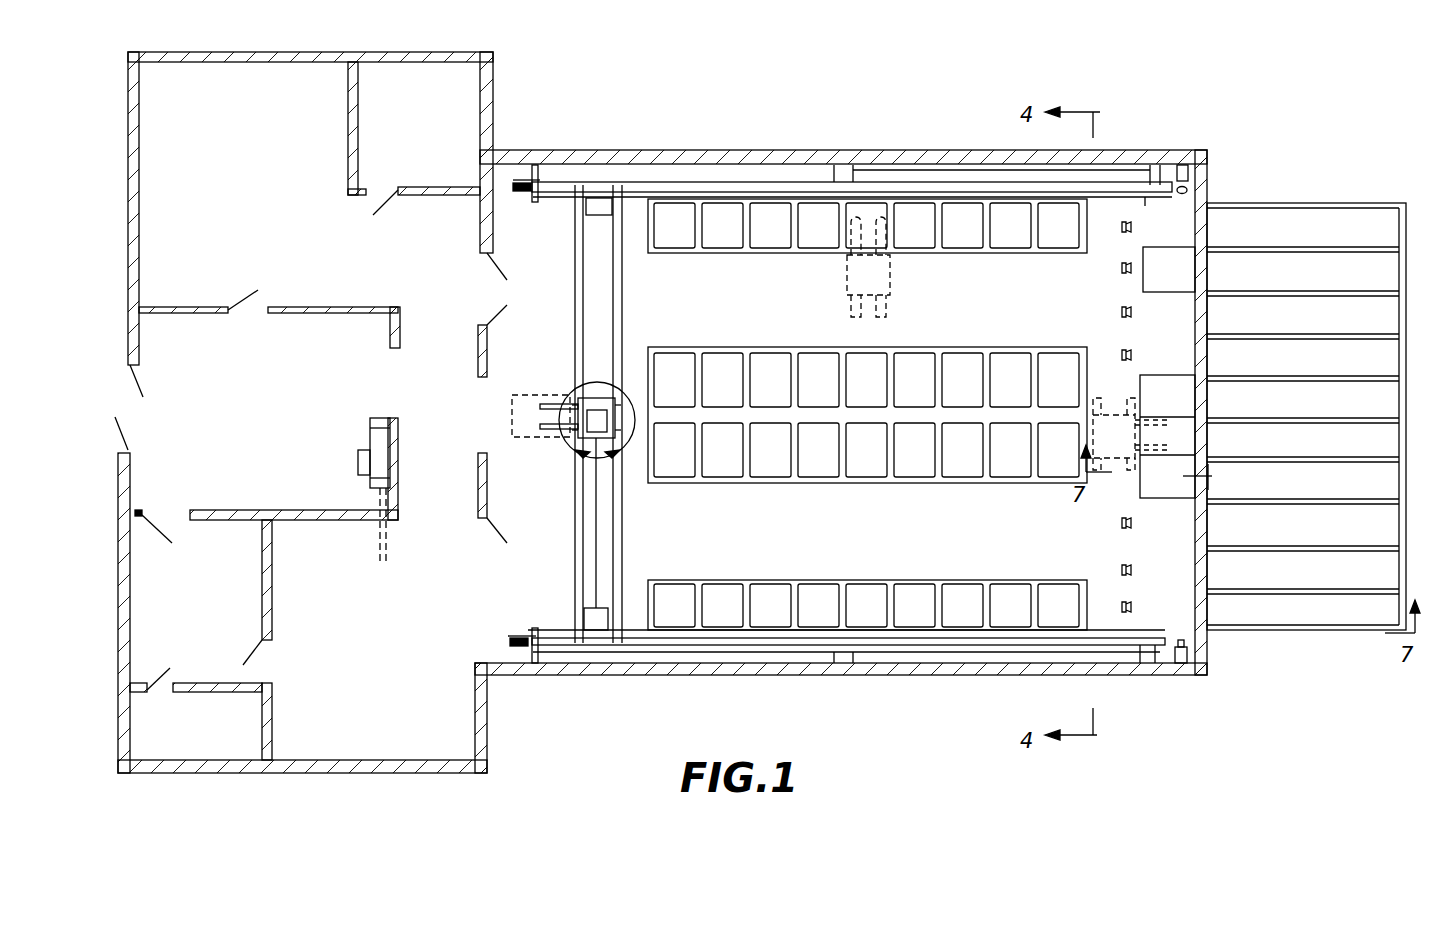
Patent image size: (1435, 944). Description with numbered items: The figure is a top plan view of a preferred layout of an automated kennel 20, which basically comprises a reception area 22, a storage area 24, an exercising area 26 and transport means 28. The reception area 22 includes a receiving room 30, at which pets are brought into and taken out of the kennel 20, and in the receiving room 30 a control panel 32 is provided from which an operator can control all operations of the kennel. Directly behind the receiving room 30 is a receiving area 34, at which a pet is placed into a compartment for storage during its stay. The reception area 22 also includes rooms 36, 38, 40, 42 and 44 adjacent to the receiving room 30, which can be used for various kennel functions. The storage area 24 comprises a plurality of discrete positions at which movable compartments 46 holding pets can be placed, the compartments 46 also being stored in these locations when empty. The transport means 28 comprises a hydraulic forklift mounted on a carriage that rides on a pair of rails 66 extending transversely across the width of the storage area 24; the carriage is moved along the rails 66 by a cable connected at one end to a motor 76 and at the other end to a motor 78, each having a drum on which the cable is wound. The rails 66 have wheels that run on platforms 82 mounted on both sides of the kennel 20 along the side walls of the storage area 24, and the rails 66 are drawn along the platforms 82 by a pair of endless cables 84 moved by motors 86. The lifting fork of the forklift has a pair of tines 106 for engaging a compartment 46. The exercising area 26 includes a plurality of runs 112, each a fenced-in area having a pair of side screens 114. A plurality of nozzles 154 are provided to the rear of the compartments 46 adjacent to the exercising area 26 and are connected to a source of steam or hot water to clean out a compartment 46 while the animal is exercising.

The kennel 20 is at (823, 688).
The reception area 22 is at (445, 689).
The storage area 24 is at (770, 316).
The exercising area 26 is at (1309, 406).
The transport means 28 is at (560, 384).
The receiving room 30 is at (258, 431).
The control panel 32 is at (391, 410).
The receiving area 34 is at (488, 426).
The room 36 is at (243, 206).
The room 38 is at (415, 141).
The room 40 is at (211, 611).
The room 42 is at (208, 738).
The room 44 is at (346, 647).
The movable compartments 46 is at (770, 245).
The rails 66 is at (615, 541).
The motor 76 is at (590, 618).
The motor 78 is at (592, 208).
The platforms 82 is at (1102, 198).
The endless cables 84 is at (728, 190).
The motors 86 is at (1183, 165).
The tines 106 is at (548, 440).
The run 112 is at (1368, 208).
The side screens 114 is at (1238, 205).
The nozzles 154 is at (1122, 268).